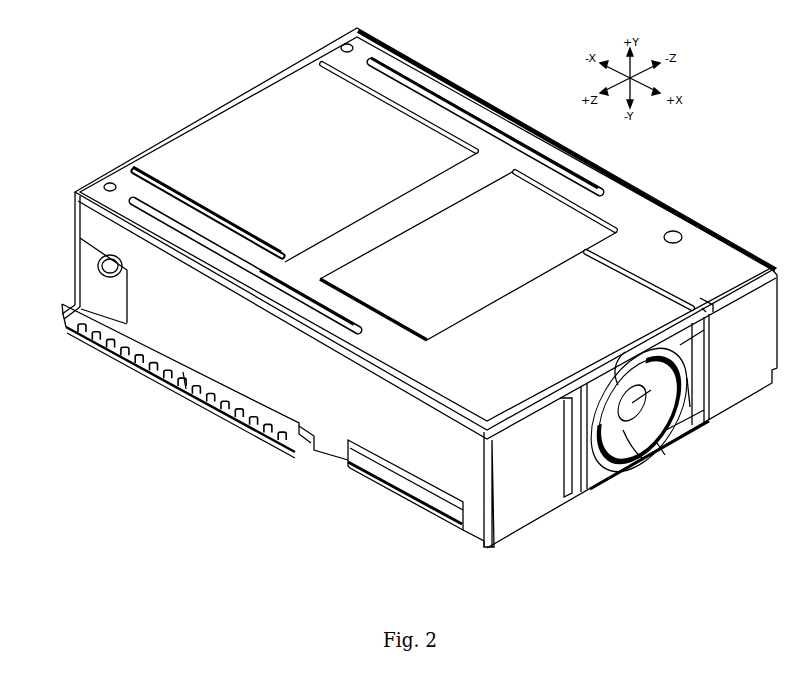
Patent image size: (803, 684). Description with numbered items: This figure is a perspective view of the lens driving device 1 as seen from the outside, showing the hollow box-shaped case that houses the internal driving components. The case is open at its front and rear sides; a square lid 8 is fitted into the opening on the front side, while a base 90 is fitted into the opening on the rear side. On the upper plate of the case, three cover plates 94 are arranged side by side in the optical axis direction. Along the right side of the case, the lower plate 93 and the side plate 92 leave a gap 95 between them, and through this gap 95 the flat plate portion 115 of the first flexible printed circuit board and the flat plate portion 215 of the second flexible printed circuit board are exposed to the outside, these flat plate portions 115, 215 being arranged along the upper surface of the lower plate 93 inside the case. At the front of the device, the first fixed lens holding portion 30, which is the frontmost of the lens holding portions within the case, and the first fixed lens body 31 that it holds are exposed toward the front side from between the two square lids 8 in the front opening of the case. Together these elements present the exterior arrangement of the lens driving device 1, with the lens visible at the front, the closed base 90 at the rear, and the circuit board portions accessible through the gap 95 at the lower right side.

The lens driving device 1 is at (196, 94).
The base 90 is at (160, 140).
The cover plates 94 is at (433, 152).
The flat plate portion 115 is at (112, 360).
The flat plate portion 215 is at (217, 418).
The gap 95 is at (307, 444).
The side plate 92 is at (423, 460).
The square lid 8 is at (740, 380).
The lower plate 93 is at (515, 533).
The first fixed lens holding portion 30 is at (704, 438).
The first fixed lens body 31 is at (643, 447).